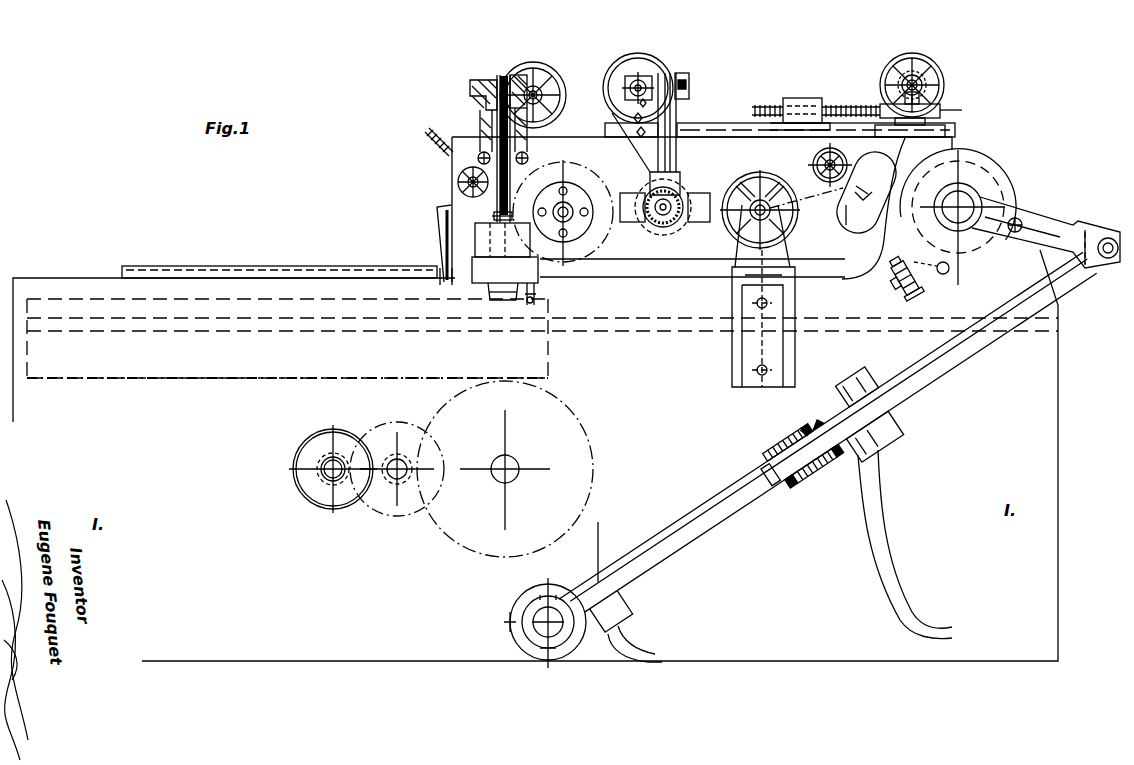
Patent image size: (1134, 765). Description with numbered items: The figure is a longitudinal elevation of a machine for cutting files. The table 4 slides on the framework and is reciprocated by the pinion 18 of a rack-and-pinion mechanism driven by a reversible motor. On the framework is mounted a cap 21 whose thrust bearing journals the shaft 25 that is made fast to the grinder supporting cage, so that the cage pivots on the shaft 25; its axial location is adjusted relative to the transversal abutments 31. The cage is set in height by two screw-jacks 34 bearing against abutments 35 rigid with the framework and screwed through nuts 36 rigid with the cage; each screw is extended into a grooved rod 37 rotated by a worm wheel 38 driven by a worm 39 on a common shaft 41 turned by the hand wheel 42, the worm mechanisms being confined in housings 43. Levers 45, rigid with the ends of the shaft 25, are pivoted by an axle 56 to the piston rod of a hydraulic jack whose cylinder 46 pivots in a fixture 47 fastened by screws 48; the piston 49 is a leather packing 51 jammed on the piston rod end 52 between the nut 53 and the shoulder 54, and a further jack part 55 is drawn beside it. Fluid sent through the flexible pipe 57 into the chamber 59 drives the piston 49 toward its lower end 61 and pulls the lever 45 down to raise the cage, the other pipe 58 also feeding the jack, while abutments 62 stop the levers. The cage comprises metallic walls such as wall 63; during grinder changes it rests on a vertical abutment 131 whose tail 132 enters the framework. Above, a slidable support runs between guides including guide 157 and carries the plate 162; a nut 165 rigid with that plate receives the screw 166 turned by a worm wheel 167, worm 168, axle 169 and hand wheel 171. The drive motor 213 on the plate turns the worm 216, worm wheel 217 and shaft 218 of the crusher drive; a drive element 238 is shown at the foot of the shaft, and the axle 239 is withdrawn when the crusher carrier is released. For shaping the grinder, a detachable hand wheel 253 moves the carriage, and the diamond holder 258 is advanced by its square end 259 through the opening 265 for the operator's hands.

The table 4 is at (550, 350).
The pinion 18 is at (590, 448).
The cap 21 is at (1005, 178).
The shaft 25 is at (930, 310).
The transversal abutment 31 is at (455, 215).
The screw-jack 34 is at (478, 242).
The abutment 35 is at (506, 300).
The nut 36 is at (512, 236).
The grooved rod 37 is at (500, 75).
The worm wheel 38 is at (496, 116).
The worm 39 is at (553, 98).
The common shaft 41 is at (533, 88).
The hand wheel 42 is at (546, 72).
The housing 43 is at (478, 80).
The lever 45 is at (1052, 218).
The cylinder 46 is at (718, 548).
The fixture 47 is at (522, 642).
The screw 48 is at (512, 620).
The piston 49 is at (820, 456).
The leather packing 51 is at (800, 432).
The piston rod end 52 is at (794, 482).
The nut 53 is at (772, 470).
The shoulder 54 is at (836, 418).
The block 55 is at (858, 392).
The axle 56 is at (1106, 238).
The flexible pipe 57 is at (912, 582).
The flexible pipe 58 is at (650, 650).
The chamber 59 is at (876, 448).
The lower end 61 is at (597, 551).
The abutment 62 is at (903, 294).
The metallic wall 63 is at (694, 210).
The vertical abutment 131 is at (536, 280).
The tail 132 is at (542, 298).
The guide 157 is at (732, 134).
The plate 162 is at (692, 126).
The nut 165 is at (800, 100).
The screw 166 is at (848, 106).
The worm wheel 167 is at (915, 104).
The worm 168 is at (914, 84).
The axle 169 is at (908, 82).
The hand wheel 171 is at (940, 96).
The drive motor 213 is at (654, 60).
The worm 216 is at (636, 80).
The worm wheel 217 is at (668, 128).
The shaft 218 is at (668, 125).
The gear 238 is at (672, 222).
The axle 239 is at (656, 222).
The detachable hand wheel 253 is at (838, 192).
The diamond holder 258 is at (860, 194).
The square end 259 is at (866, 192).
The opening 265 is at (850, 228).